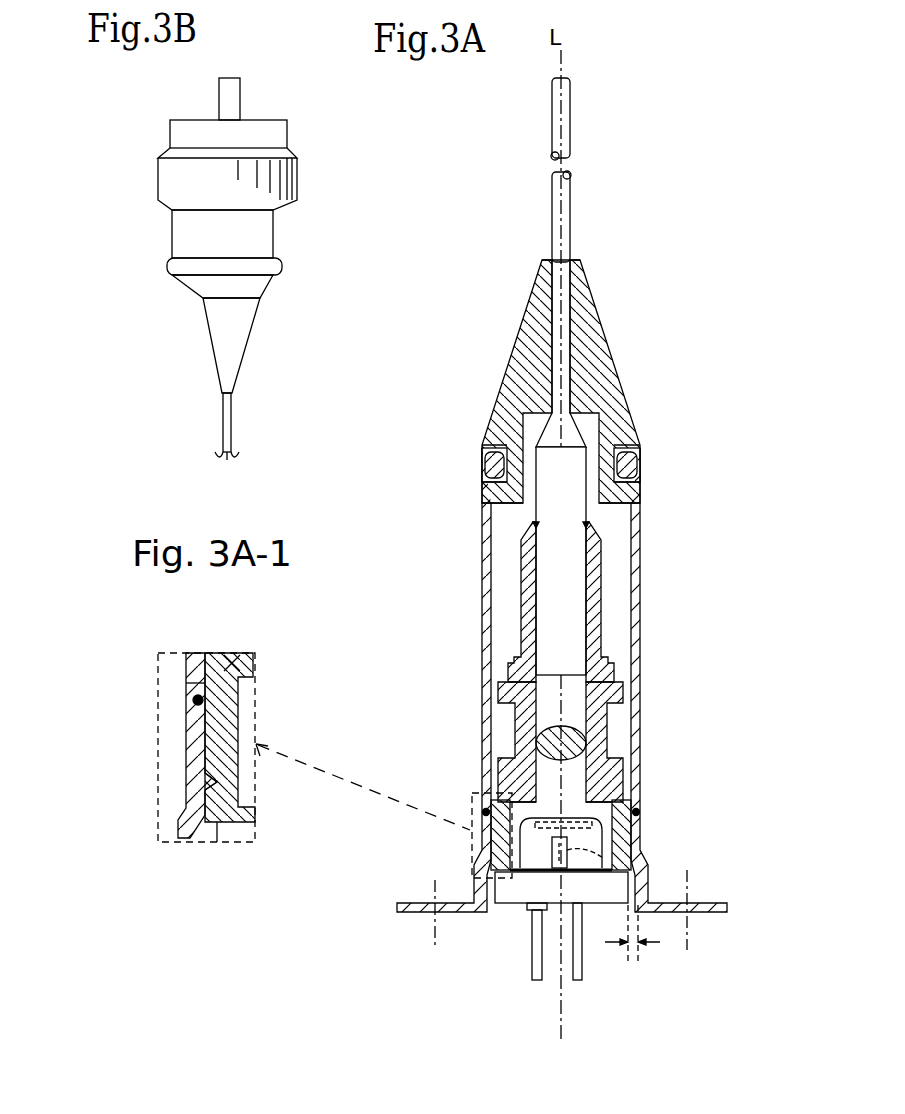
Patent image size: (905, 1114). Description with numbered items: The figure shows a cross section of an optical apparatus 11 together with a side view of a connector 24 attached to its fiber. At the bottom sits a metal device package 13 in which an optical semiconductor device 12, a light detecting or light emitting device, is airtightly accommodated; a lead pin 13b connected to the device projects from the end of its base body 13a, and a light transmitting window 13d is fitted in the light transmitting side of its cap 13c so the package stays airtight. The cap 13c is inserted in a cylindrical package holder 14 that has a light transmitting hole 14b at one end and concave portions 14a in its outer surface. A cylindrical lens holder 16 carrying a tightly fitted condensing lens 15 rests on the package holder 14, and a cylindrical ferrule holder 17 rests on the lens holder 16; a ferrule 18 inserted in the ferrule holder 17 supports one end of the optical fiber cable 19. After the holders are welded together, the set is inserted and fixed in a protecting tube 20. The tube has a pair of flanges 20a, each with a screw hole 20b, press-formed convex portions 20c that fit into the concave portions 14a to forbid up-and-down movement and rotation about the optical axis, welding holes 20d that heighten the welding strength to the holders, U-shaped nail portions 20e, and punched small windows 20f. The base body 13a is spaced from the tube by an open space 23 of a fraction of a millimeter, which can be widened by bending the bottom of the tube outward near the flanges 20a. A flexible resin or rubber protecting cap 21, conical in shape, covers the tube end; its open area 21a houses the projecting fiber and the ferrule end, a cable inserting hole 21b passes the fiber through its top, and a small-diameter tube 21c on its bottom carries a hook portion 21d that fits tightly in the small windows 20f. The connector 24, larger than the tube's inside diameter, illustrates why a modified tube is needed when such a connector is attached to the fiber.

In FIG. 3A, the optical apparatus 11 is at (633, 320).
In FIG. 3A, the optical semiconductor device 12 is at (645, 853).
In FIG. 3A, the device package 13 is at (540, 857).
In FIG. 3A, the base body 13a is at (602, 893).
In FIG. 3A, the lead pin 13b is at (537, 982).
In FIG. 3A, the cap 13c is at (527, 870).
In FIG. 3A, the light transmitting window 13d is at (645, 803).
In FIG. 3A, the package holder 14 is at (620, 835).
In FIG. 3A-1, the package holder 14 is at (240, 655).
In FIG. 3A-1, the concave portions 14a is at (250, 808).
In FIG. 3A, the light transmitting hole 14b is at (587, 767).
In FIG. 3A, the condensing lens 15 is at (537, 727).
In FIG. 3A, the lens holder 16 is at (600, 697).
In FIG. 3A, the ferrule holder 17 is at (600, 592).
In FIG. 3A, the ferrule 18 is at (573, 478).
In FIG. 3A, the optical fiber cable 19 is at (572, 228).
In FIG. 3B, the optical fiber cable 19 is at (224, 420).
In FIG. 3A, the protecting tube 20 is at (642, 542).
In FIG. 3A-1, the protecting tube 20 is at (187, 835).
In FIG. 3A, the flanges 20a is at (427, 912).
In FIG. 3A, the screw hole 20b is at (433, 933).
In FIG. 3A-1, the convex portions 20c is at (197, 780).
In FIG. 3A-1, the welding holes 20d is at (185, 693).
In FIG. 3A, the nail portions 20e is at (503, 463).
In FIG. 3A, the small windows 20f is at (497, 493).
In FIG. 3A, the protecting cap 21 is at (515, 365).
In FIG. 3A, the open area 21a is at (590, 427).
In FIG. 3A, the cable inserting hole 21b is at (535, 293).
In FIG. 3A, the small-diameter tube 21c is at (513, 427).
In FIG. 3A, the hook portion 21d is at (485, 497).
In FIG. 3A, the open space 23 is at (627, 950).
In FIG. 3B, the connector 24 is at (167, 188).